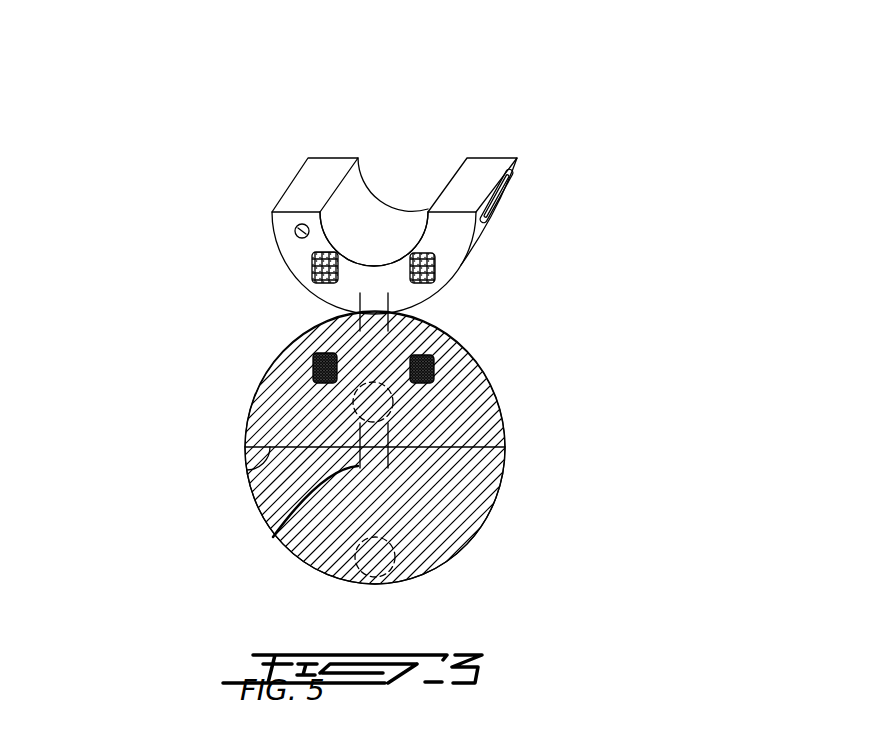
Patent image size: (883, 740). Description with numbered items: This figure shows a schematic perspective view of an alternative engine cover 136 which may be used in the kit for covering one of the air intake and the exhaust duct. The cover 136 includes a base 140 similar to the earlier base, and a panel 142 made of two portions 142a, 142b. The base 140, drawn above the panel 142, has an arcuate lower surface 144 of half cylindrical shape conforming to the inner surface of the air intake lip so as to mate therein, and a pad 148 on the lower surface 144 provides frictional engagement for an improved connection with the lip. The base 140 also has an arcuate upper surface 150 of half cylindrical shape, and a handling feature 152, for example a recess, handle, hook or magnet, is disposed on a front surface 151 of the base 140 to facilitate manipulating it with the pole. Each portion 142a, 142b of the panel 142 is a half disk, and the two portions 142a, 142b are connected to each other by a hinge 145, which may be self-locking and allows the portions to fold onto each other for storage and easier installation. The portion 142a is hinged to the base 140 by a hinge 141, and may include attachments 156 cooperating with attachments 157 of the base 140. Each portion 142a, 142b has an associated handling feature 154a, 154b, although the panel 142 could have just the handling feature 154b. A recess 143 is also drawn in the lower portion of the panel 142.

The cover 136 is at (712, 193).
The base 140 is at (293, 167).
The upper surface 150 is at (400, 218).
The lower surface 144 is at (512, 172).
The pad 148 is at (497, 203).
The handling feature 152 is at (295, 232).
The front surface 151 is at (297, 257).
The attachments 157 is at (427, 273).
The hinge 141 is at (397, 320).
The attachments 156 is at (430, 375).
The handling feature 154a is at (353, 400).
The handling feature 154b is at (390, 563).
The portion 142a is at (472, 417).
The panel 142 is at (450, 455).
The portion 142b is at (440, 502).
The recess 143 is at (247, 467).
The hinge 145 is at (283, 535).